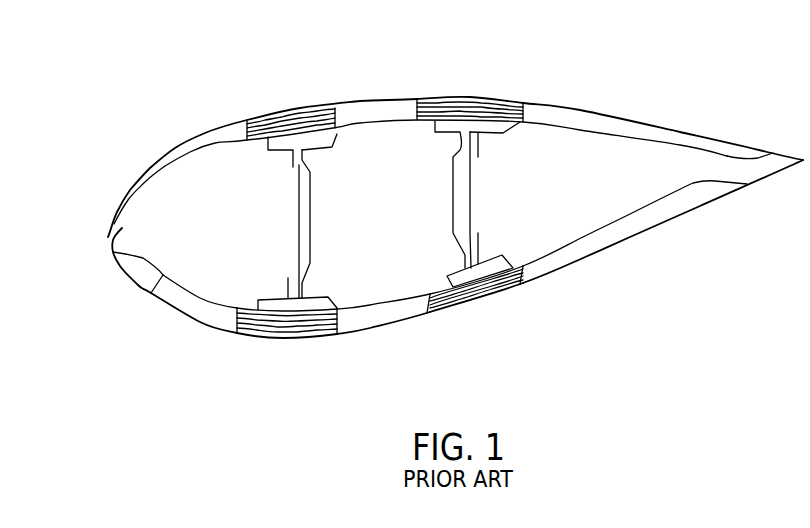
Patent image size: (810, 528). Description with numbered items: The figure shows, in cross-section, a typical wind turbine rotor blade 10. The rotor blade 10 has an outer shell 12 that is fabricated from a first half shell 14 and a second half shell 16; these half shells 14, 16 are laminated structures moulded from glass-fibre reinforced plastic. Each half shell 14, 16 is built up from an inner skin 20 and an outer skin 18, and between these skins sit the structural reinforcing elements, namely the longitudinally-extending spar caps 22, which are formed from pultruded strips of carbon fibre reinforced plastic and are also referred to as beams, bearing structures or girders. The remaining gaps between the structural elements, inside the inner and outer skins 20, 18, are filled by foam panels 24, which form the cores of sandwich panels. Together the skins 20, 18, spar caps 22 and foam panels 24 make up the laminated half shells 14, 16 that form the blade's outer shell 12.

The wind turbine rotor blade 10 is at (168, 107).
The outer shell 12 is at (613, 114).
The first half shell 14 is at (658, 130).
The second half shell 16 is at (600, 250).
The outer skin 18 is at (200, 332).
The inner skin 20 is at (158, 280).
The spar cap 22 is at (277, 122).
The foam panel 24 is at (367, 320).